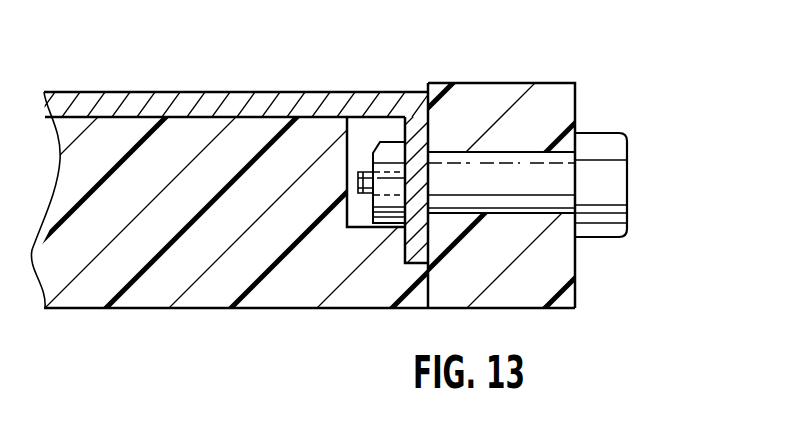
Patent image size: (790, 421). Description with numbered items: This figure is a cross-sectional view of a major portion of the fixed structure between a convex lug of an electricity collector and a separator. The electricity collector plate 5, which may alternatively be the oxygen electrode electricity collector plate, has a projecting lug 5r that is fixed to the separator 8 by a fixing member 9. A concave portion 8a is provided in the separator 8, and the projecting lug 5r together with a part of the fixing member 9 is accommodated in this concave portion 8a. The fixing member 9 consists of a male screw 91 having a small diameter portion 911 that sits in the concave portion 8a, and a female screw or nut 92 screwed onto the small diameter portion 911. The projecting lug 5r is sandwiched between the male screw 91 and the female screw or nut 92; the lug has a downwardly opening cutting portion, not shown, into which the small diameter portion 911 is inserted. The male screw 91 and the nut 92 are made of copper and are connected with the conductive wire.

The electricity collector plate 5 is at (240, 80).
The projecting lug 5r is at (464, 84).
The separator 8 is at (489, 106).
The concave portion 8a is at (370, 172).
The fixing member 9 is at (542, 231).
The male screw 91 is at (530, 170).
The small diameter portion 911 is at (373, 143).
The female screw or nut 92 is at (389, 223).